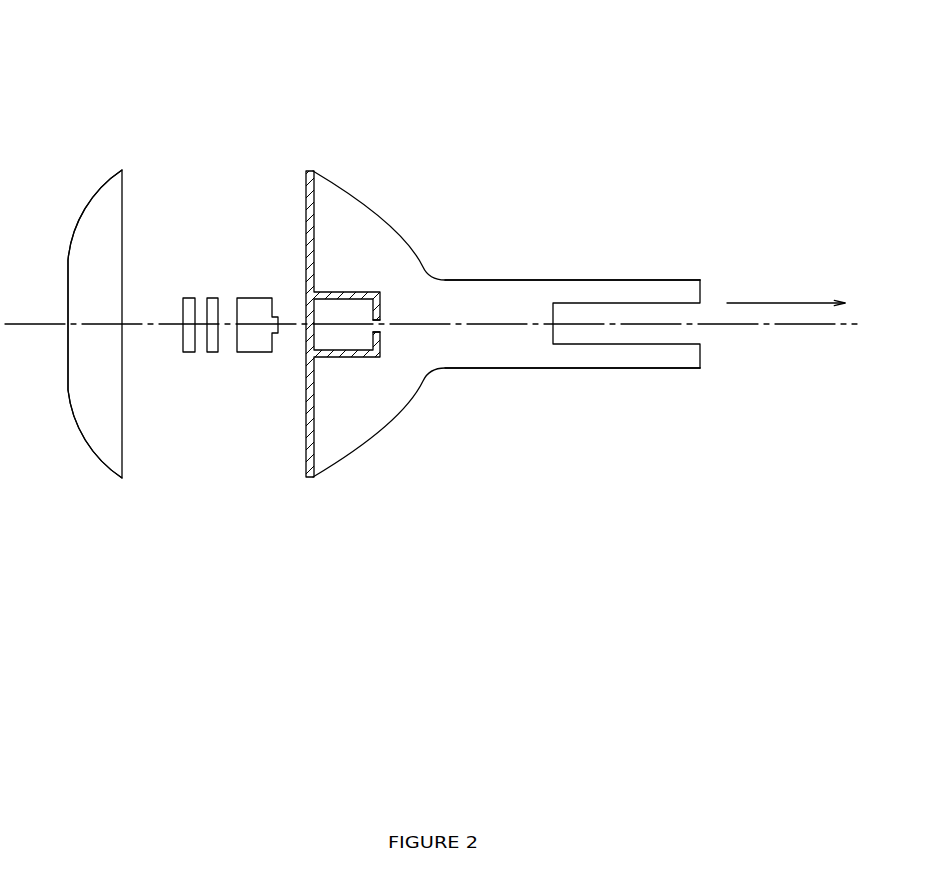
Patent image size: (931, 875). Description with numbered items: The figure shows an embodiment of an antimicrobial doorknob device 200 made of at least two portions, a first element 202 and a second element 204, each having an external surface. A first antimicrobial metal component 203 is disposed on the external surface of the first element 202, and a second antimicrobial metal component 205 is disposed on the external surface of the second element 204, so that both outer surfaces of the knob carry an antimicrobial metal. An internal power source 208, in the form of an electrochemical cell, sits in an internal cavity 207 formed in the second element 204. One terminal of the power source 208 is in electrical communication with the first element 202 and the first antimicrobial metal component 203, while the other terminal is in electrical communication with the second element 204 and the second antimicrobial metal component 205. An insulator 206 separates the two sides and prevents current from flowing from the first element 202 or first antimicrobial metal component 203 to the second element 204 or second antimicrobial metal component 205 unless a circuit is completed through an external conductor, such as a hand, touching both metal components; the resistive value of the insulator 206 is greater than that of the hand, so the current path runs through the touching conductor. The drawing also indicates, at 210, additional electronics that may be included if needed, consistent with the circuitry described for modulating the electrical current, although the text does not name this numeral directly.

The antimicrobial doorknob device 200 is at (428, 390).
The first element 202 is at (122, 169).
The first antimicrobial metal component 203 is at (93, 196).
The second element 204 is at (375, 210).
The second antimicrobial metal component 205 is at (423, 262).
The insulator 206 is at (304, 171).
The internal cavity 207 is at (366, 320).
The power source 208 is at (256, 353).
The additional electronics 210 is at (211, 353).